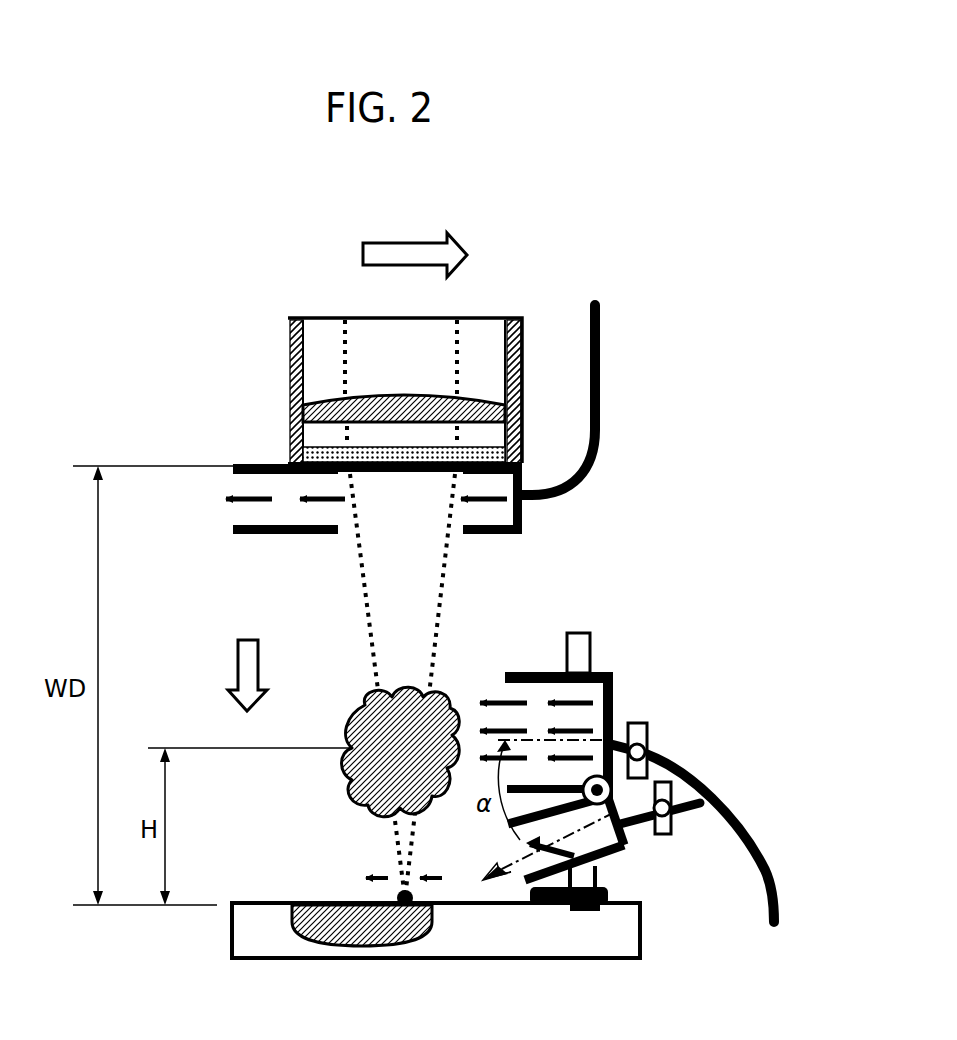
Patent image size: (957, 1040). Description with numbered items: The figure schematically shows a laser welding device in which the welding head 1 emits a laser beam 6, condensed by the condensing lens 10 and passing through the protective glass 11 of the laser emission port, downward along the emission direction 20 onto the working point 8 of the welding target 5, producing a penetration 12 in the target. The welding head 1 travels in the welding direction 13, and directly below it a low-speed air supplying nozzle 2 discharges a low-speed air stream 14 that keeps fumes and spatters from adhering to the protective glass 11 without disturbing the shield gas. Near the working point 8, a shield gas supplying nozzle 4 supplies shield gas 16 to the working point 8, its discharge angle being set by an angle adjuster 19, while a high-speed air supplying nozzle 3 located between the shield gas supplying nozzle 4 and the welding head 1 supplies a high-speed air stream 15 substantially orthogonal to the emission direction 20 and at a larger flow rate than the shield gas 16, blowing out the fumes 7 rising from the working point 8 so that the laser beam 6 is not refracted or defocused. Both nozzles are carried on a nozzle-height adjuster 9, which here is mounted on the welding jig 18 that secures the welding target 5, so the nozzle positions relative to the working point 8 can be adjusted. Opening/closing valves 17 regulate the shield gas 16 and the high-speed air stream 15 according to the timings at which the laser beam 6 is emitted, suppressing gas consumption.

The welding head 1 is at (289, 352).
The low-speed air supplying nozzle 2 is at (250, 463).
The high-speed air supplying nozzle 3 is at (562, 671).
The shield gas supplying nozzle 4 is at (622, 850).
The welding target 5 is at (623, 927).
The laser beam 6 is at (368, 650).
The fumes 7 is at (388, 728).
The working point 8 is at (397, 897).
The nozzle-height adjuster 9 is at (581, 632).
The condensing lens 10 is at (395, 410).
The protective glass 11 is at (292, 456).
The penetration 12 is at (375, 930).
The welding direction 13 is at (415, 244).
The low-speed air stream 14 is at (258, 500).
The high-speed air stream 15 is at (579, 745).
The shield gas 16 is at (517, 873).
The opening/closing valves 17 is at (665, 782).
The welding jig 18 is at (580, 905).
The angle adjuster 19 is at (610, 797).
The emission direction 20 is at (232, 675).